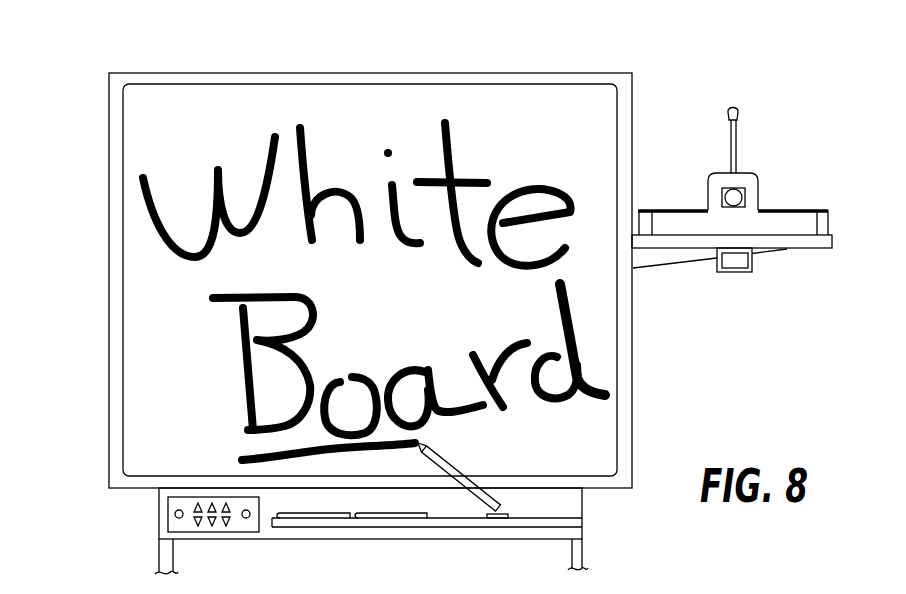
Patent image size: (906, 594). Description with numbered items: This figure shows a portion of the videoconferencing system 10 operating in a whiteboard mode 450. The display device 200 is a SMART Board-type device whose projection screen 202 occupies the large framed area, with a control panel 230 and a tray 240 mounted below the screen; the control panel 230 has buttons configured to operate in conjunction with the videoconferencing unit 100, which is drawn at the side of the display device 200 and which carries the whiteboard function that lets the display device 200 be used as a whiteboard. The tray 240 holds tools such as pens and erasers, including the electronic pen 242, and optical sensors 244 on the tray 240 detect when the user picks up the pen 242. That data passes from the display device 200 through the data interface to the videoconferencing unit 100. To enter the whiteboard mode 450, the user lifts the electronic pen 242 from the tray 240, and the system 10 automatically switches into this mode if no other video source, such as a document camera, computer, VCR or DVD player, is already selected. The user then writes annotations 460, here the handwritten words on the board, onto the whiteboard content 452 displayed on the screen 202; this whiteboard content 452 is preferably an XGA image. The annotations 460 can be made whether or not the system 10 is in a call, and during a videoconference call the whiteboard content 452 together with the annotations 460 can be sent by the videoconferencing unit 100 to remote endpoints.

The videoconferencing system 10 is at (736, 55).
The videoconferencing unit 100 is at (801, 168).
The display device 200 is at (165, 72).
The projection screen 202 is at (260, 98).
The control panel 230 is at (168, 514).
The tray 240 is at (569, 511).
The electronic pen 242 is at (433, 451).
The optical sensors 244 is at (500, 508).
The whiteboard mode 450 is at (53, 100).
The whiteboard content 452 is at (558, 108).
The annotations 460 is at (605, 390).